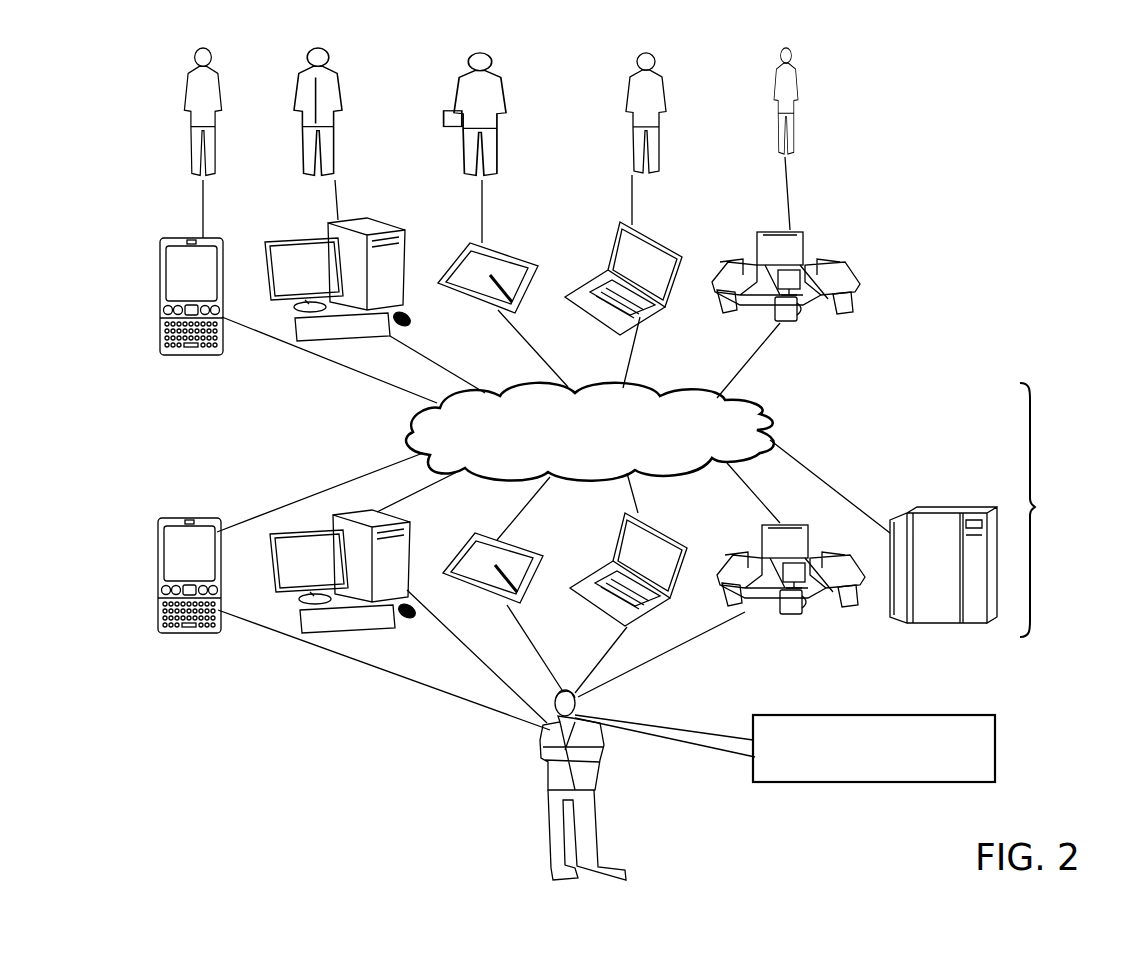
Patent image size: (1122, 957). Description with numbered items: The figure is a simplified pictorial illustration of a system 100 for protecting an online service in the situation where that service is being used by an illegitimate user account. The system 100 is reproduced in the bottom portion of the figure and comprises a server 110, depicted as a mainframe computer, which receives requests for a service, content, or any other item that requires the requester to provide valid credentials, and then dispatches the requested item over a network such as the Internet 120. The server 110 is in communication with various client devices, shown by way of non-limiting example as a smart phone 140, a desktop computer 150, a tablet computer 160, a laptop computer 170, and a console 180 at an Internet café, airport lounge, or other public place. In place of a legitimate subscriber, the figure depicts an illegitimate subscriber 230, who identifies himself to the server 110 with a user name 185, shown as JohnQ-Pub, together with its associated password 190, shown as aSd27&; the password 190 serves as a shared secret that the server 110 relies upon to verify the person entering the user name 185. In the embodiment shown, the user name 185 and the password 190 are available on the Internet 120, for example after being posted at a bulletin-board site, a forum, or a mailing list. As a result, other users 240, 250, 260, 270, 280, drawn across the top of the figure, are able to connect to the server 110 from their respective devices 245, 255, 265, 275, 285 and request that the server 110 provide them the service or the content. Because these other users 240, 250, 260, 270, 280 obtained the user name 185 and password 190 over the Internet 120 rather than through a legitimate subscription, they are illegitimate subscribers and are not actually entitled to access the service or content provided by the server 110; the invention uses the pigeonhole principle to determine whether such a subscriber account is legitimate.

The system 100 is at (1051, 510).
The server 110 is at (958, 507).
The Internet 120 is at (770, 413).
The smart phone 140 is at (157, 575).
The desktop computer 150 is at (408, 540).
The tablet computer 160 is at (540, 550).
The laptop computer 170 is at (682, 543).
The console 180 is at (820, 600).
The user name 185 is at (497, 418).
The password 190 is at (487, 447).
The illegitimate subscriber 230 is at (602, 803).
The other user 240 is at (185, 150).
The device 245 is at (159, 290).
The other user 250 is at (333, 72).
The device 255 is at (383, 226).
The other user 260 is at (453, 112).
The device 265 is at (522, 258).
The other user 270 is at (640, 125).
The device 275 is at (674, 247).
The other user 280 is at (795, 75).
The device 285 is at (826, 265).